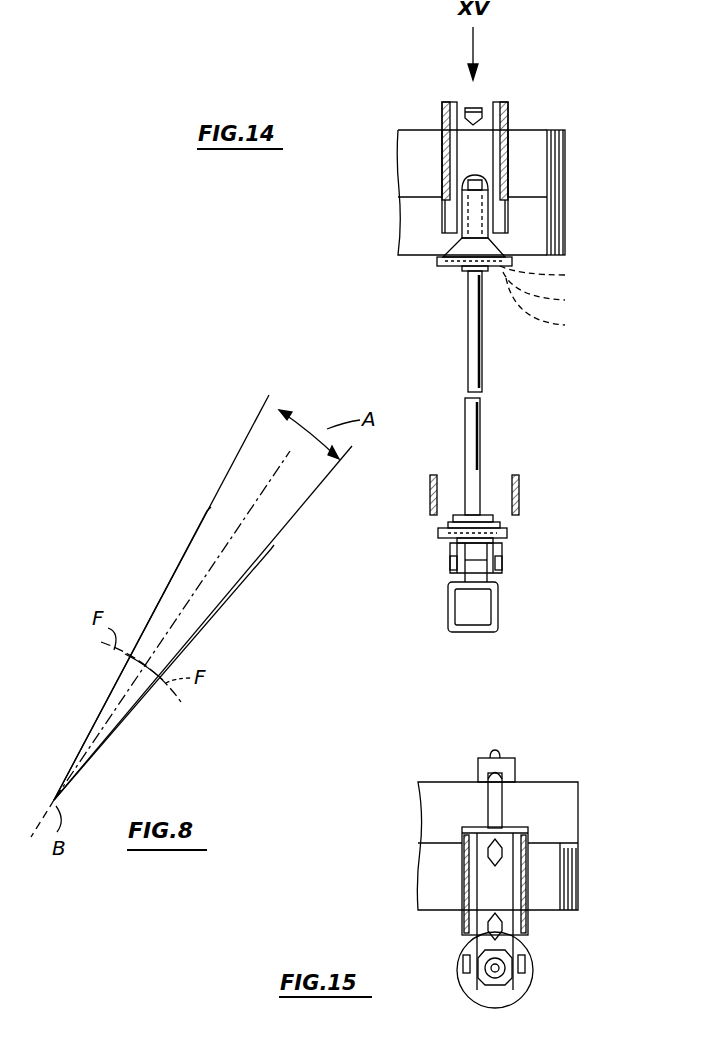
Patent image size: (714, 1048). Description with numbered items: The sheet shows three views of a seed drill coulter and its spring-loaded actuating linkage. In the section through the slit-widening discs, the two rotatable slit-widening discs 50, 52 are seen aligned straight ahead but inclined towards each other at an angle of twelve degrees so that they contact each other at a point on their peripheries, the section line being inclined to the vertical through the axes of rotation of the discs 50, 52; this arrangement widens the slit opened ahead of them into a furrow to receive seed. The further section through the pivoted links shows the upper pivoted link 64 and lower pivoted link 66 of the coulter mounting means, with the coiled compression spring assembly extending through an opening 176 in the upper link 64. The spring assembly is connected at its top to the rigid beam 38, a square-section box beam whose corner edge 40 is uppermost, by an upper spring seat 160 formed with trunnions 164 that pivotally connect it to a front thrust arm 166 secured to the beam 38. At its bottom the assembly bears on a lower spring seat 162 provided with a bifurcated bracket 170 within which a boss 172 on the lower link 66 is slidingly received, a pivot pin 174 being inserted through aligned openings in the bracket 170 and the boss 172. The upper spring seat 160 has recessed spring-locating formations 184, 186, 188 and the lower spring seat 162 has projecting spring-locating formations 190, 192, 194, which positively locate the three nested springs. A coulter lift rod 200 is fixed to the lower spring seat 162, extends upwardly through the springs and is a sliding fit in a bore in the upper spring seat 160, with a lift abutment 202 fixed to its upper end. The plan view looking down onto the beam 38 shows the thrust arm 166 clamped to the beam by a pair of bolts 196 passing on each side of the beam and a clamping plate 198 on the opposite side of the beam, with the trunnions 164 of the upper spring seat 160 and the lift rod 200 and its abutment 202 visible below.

In FIG. 14, the rigid beam 38 is at (565, 140).
In FIG. 15, the rigid beam 38 is at (565, 800).
In FIG. 14, the corner edge 40 is at (549, 130).
In FIG. 15, the corner edge 40 is at (560, 858).
In FIG. 8, the slit-widening disc 50 is at (212, 622).
In FIG. 8, the slit-widening disc 52 is at (180, 551).
In FIG. 14, the upper pivoted link 64 is at (430, 490).
In FIG. 14, the lower pivoted link 66 is at (448, 620).
In FIG. 14, the upper spring seat 160 is at (498, 248).
In FIG. 15, the upper spring seat 160 is at (525, 940).
In FIG. 14, the lower spring seat 162 is at (507, 533).
In FIG. 14, the trunnion 164 is at (490, 215).
In FIG. 15, the trunnion 164 is at (525, 967).
In FIG. 14, the front thrust arm 166 is at (487, 135).
In FIG. 15, the front thrust arm 166 is at (505, 838).
In FIG. 14, the bifurcated bracket 170 is at (455, 548).
In FIG. 14, the boss 172 is at (475, 576).
In FIG. 14, the pivot pin 174 is at (502, 557).
In FIG. 14, the opening 176 is at (498, 445).
In FIG. 14, the spring-locating formation 184 is at (551, 273).
In FIG. 14, the spring-locating formation 186 is at (553, 290).
In FIG. 14, the spring-locating formation 188 is at (554, 305).
In FIG. 14, the spring-locating formation 190 is at (493, 519).
In FIG. 14, the spring-locating formation 192 is at (462, 538).
In FIG. 14, the spring-locating formation 194 is at (455, 524).
In FIG. 14, the bolt 196 is at (476, 108).
In FIG. 15, the bolt 196 is at (505, 787).
In FIG. 15, the clamping plate 198 is at (478, 762).
In FIG. 14, the coulter lift rod 200 is at (483, 348).
In FIG. 15, the coulter lift rod 200 is at (497, 960).
In FIG. 14, the lift abutment 202 is at (486, 186).
In FIG. 15, the lift abutment 202 is at (485, 970).